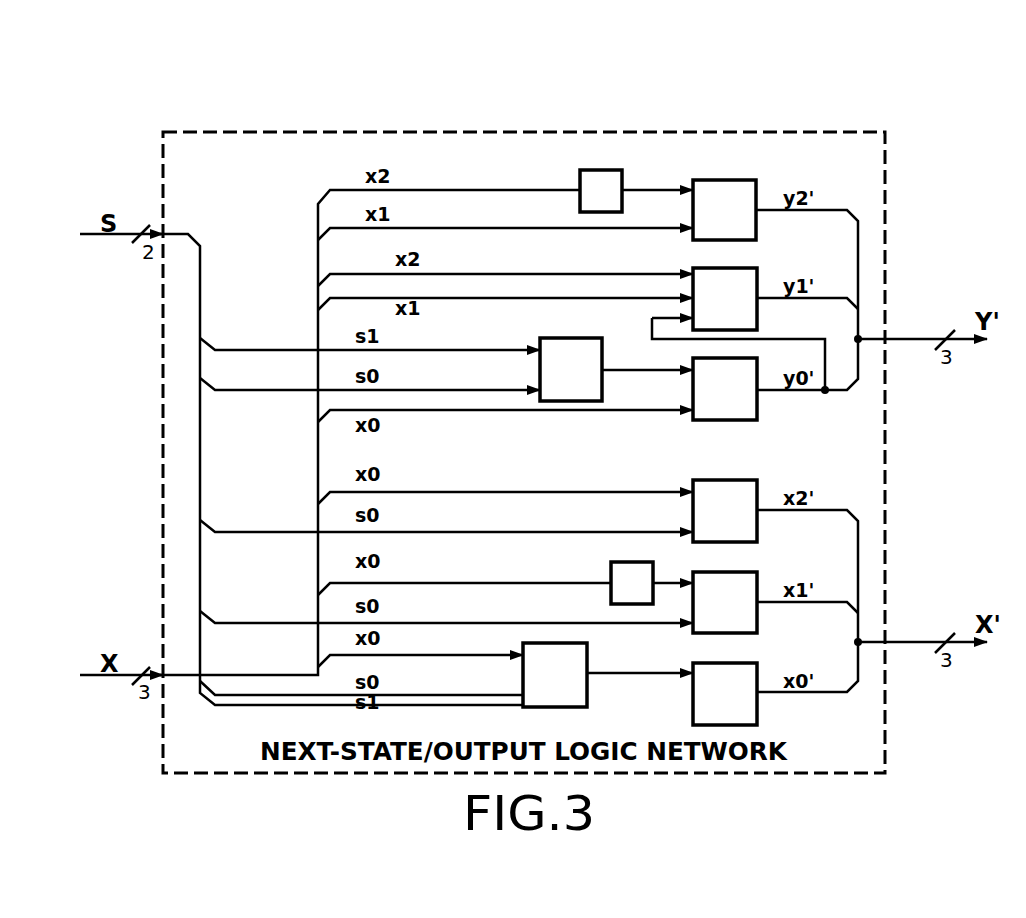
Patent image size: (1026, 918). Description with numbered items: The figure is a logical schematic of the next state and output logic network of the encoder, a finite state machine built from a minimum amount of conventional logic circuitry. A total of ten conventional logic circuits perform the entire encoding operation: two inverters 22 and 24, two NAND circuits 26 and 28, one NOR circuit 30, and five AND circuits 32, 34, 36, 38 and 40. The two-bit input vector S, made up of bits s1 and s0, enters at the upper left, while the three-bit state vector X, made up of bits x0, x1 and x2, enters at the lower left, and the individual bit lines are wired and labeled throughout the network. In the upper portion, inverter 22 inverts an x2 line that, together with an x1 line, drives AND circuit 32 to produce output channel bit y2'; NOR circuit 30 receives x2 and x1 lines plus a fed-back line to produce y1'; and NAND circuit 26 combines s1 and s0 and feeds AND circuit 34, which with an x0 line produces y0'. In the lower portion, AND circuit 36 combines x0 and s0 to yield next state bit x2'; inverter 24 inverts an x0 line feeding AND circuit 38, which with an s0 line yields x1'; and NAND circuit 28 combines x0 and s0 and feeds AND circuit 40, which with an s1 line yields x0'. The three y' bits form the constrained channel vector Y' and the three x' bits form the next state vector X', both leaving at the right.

The inverter 22 is at (615, 172).
The inverter 24 is at (648, 564).
The nand circuit 26 is at (588, 338).
The nand circuit 28 is at (587, 652).
The nor circuit 30 is at (740, 277).
The and circuit 32 is at (740, 180).
The and circuit 34 is at (752, 370).
The and circuit 36 is at (730, 480).
The and circuit 38 is at (752, 573).
The and circuit 40 is at (748, 668).